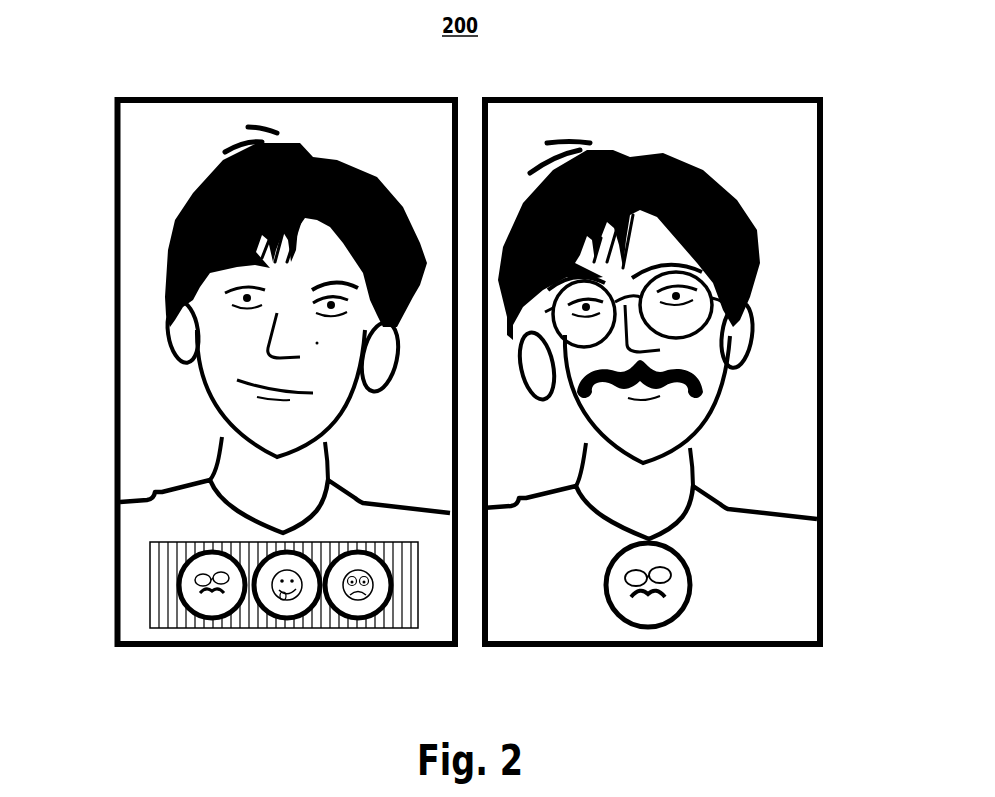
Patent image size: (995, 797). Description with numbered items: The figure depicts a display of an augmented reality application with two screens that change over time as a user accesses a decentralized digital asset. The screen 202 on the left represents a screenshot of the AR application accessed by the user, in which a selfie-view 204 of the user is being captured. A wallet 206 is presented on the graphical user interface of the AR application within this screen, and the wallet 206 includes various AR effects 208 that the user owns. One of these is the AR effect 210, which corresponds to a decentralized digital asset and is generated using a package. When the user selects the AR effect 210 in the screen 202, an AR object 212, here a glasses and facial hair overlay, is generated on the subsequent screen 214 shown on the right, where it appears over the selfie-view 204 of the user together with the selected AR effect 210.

The screen 202 is at (173, 100).
The selfie-view 204 is at (163, 252).
The wallet 206 is at (150, 583).
The AR effects 208 is at (345, 623).
The AR effect 210 is at (186, 614).
The AR object 212 is at (670, 337).
The screen 214 is at (609, 100).